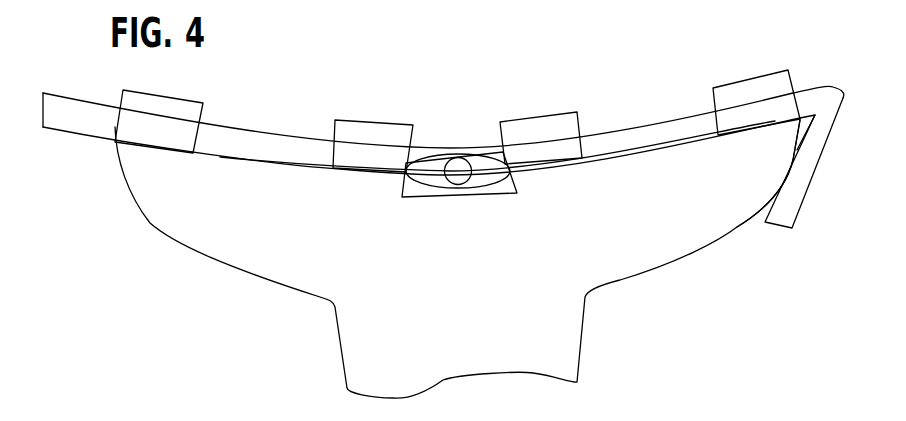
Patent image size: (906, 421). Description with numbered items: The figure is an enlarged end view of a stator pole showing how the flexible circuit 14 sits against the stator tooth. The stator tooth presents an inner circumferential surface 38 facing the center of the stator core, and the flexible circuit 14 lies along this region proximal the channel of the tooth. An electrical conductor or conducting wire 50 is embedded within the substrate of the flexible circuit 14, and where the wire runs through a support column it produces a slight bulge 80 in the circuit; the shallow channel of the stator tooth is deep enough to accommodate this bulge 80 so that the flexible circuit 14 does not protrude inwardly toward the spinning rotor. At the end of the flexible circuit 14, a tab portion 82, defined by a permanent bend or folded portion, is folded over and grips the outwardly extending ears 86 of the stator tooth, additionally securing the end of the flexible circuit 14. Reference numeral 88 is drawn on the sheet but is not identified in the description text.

The flexible circuit 14 is at (84, 120).
The inner circumferential surface 38 is at (168, 105).
The bulge 80 is at (430, 163).
The conducting wire 50 is at (460, 175).
The outwardly extending ears 86 is at (192, 185).
The body side 88 is at (730, 168).
The tab portion 82 is at (803, 168).